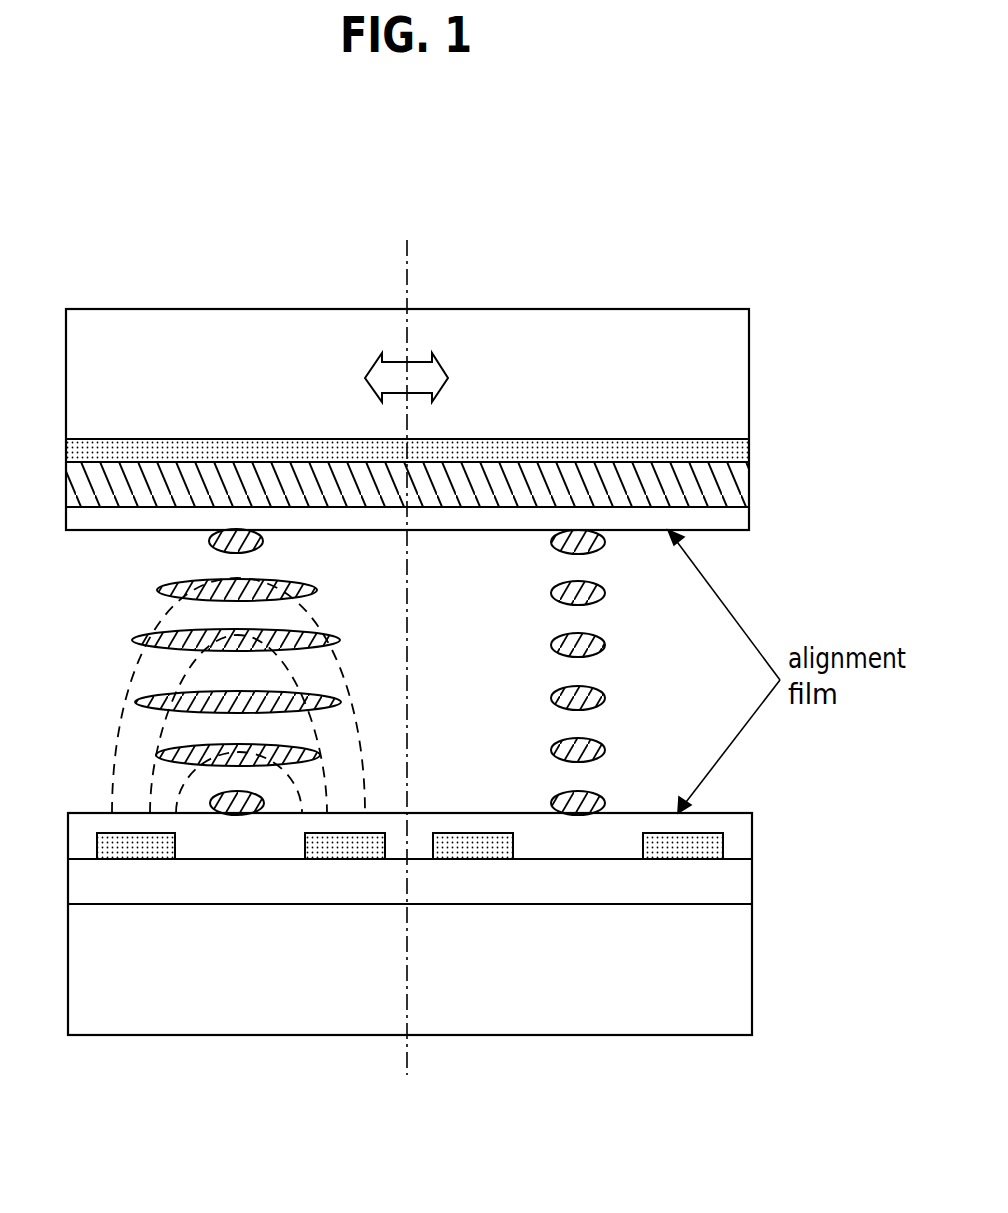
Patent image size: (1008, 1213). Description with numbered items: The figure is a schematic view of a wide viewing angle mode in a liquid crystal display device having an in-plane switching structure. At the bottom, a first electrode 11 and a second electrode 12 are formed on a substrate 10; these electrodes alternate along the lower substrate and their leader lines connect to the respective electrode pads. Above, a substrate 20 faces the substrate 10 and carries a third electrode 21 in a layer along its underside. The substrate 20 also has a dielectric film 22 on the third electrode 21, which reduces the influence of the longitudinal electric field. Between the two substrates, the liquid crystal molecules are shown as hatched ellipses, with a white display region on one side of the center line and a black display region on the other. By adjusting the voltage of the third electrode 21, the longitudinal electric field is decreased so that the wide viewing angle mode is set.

The substrate 10 is at (340, 1036).
The first electrode 11 is at (440, 859).
The second electrode 12 is at (362, 859).
The substrate 20 is at (210, 307).
The third electrode 21 is at (481, 440).
The dielectric film 22 is at (678, 462).